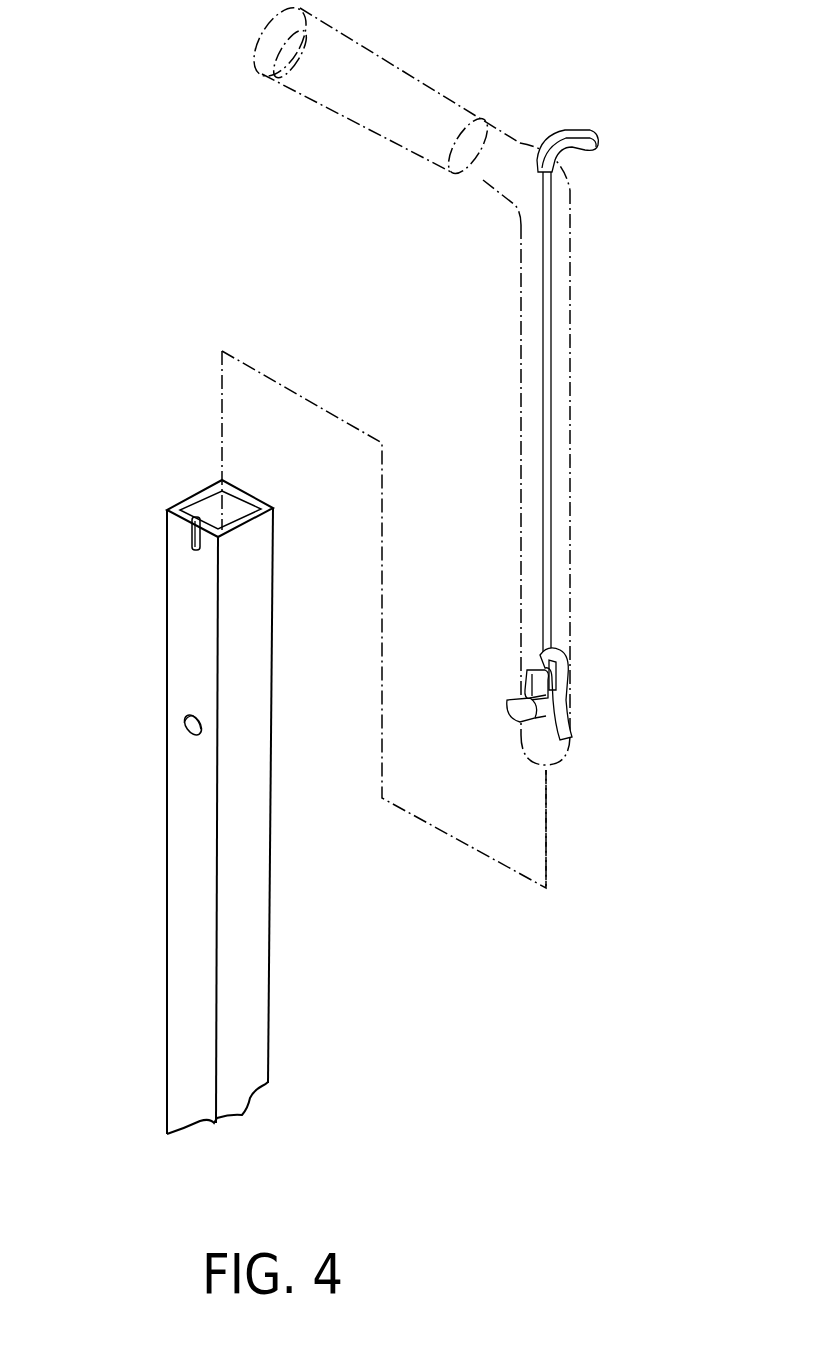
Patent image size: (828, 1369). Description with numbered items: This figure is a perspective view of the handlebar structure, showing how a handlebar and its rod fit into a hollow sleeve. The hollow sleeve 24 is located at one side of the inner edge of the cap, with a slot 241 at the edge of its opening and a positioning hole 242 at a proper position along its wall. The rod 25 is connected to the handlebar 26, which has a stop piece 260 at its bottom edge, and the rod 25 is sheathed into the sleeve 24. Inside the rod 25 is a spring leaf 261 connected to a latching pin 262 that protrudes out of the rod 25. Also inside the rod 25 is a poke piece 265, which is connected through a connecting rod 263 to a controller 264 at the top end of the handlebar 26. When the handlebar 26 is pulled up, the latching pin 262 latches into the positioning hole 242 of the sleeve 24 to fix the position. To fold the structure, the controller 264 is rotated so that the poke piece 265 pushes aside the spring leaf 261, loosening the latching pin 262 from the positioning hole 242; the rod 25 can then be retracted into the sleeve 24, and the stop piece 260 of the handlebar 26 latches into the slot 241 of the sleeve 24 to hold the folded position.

The hollow sleeve 24 is at (180, 652).
The slot 241 is at (197, 530).
The positioning hole 242 is at (185, 730).
The rod 25 is at (523, 387).
The handlebar 26 is at (365, 135).
The stop piece 260 is at (492, 192).
The spring leaf 261 is at (560, 677).
The latching pin 262 is at (507, 710).
The connecting rod 263 is at (547, 508).
The controller 264 is at (580, 152).
The poke piece 265 is at (525, 673).